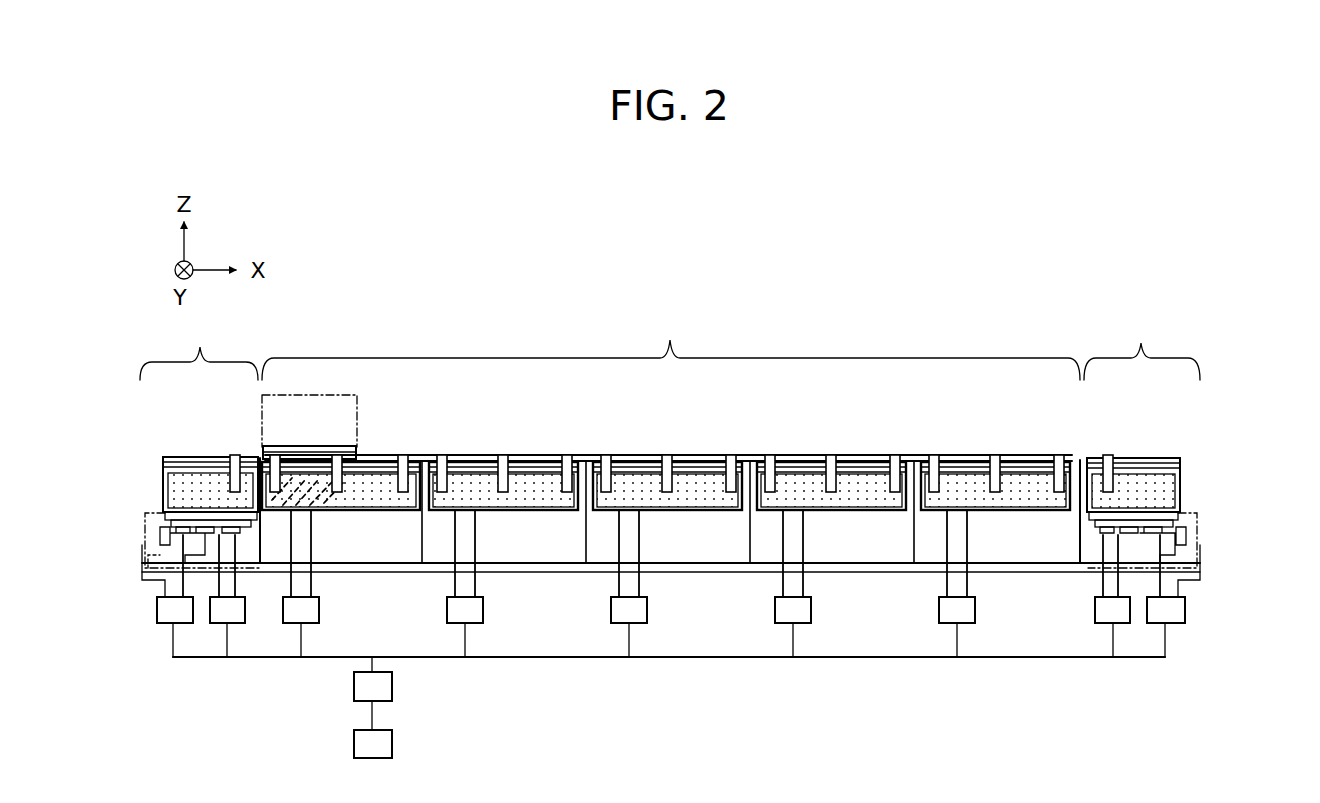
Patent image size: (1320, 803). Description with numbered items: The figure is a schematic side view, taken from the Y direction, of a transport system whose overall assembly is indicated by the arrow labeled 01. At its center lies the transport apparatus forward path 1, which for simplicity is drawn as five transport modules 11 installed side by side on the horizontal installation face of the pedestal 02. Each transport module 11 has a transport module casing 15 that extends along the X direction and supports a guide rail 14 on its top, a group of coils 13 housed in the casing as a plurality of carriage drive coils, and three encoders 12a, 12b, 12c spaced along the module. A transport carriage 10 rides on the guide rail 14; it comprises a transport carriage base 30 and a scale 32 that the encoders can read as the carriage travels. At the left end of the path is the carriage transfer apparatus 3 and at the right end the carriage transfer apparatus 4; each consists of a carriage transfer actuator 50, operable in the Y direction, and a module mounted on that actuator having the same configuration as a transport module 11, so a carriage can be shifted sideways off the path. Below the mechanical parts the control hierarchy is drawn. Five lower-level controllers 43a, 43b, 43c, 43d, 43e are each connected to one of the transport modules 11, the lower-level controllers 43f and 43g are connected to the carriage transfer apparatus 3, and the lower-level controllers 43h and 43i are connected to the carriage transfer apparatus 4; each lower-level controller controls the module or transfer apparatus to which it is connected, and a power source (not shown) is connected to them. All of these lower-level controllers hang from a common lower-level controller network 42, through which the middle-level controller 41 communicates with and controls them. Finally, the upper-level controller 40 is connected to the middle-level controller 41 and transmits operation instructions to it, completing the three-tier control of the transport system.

The carriage transfer apparatus 3 is at (199, 349).
The transport apparatus forward path 1 is at (671, 346).
The carriage transfer apparatus 4 is at (1142, 349).
The display apparatus 01 is at (1052, 313).
The pedestal 02 is at (1076, 566).
The transport carriage 10 is at (332, 393).
The transport module 11 is at (165, 491).
The encoder 12a is at (232, 454).
The encoder 12b is at (340, 454).
The encoder 12c is at (403, 453).
The group of coils 13 is at (466, 475).
The guide rail 14 is at (525, 461).
The transport module casing 15 is at (350, 560).
The transport carriage base 30 is at (286, 446).
The scale 32 is at (324, 446).
The upper-level controller 40 is at (388, 754).
The middle-level controller 41 is at (388, 696).
The lower-level controller network 42 is at (563, 660).
The lower-level controller 43a is at (312, 624).
The lower-level controller 43b is at (478, 624).
The lower-level controller 43c is at (642, 624).
The lower-level controller 43d is at (806, 624).
The lower-level controller 43e is at (970, 624).
The lower-level controller 43f is at (186, 624).
The lower-level controller 43g is at (239, 624).
The lower-level controller 43h is at (1178, 624).
The lower-level controller 43i is at (1124, 624).
The carriage transfer actuator 50 is at (146, 525).